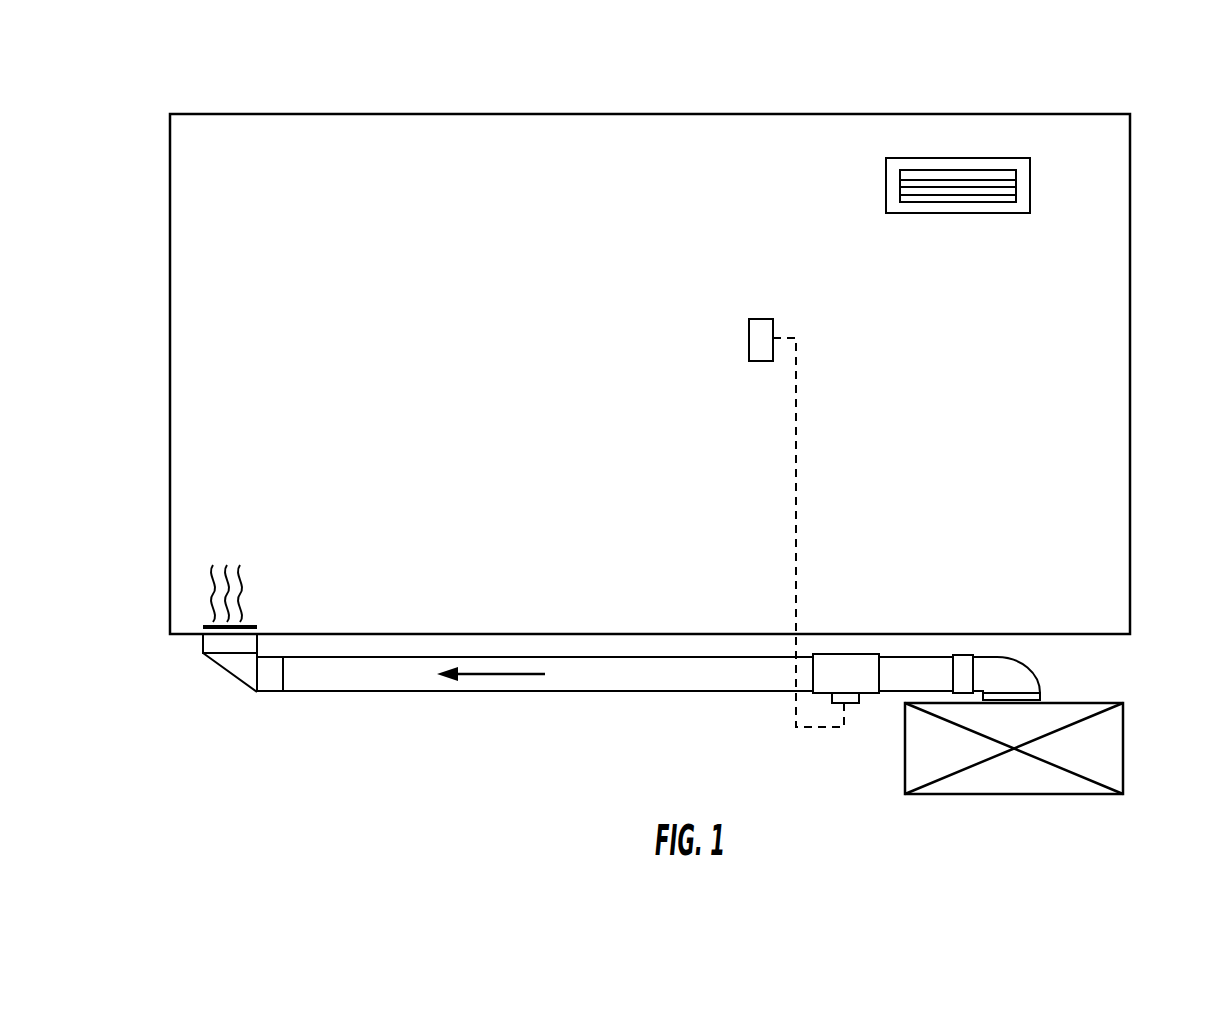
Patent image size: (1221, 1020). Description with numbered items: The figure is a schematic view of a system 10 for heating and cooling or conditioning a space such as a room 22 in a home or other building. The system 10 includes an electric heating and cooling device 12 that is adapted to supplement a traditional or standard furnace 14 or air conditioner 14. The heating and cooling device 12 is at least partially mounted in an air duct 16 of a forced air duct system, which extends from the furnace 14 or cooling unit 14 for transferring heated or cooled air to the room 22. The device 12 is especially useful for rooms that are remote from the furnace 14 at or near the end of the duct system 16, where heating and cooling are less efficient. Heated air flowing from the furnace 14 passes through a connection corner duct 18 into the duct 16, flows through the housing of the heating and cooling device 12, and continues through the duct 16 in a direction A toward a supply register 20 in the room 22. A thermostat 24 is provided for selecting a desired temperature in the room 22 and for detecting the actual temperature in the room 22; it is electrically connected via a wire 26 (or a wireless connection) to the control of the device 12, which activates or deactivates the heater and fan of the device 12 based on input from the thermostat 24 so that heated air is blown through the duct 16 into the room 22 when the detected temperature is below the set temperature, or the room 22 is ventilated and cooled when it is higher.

The system 10 is at (152, 96).
The room 22 is at (1131, 418).
The thermostat 24 is at (768, 319).
The wire 26 is at (797, 507).
The supply register 20 is at (213, 625).
The air duct 16 is at (449, 691).
The direction of air flow A is at (523, 674).
The heating and cooling device 12 is at (869, 693).
The connection corner duct 18 is at (1040, 677).
The furnace 14 is at (1123, 740).